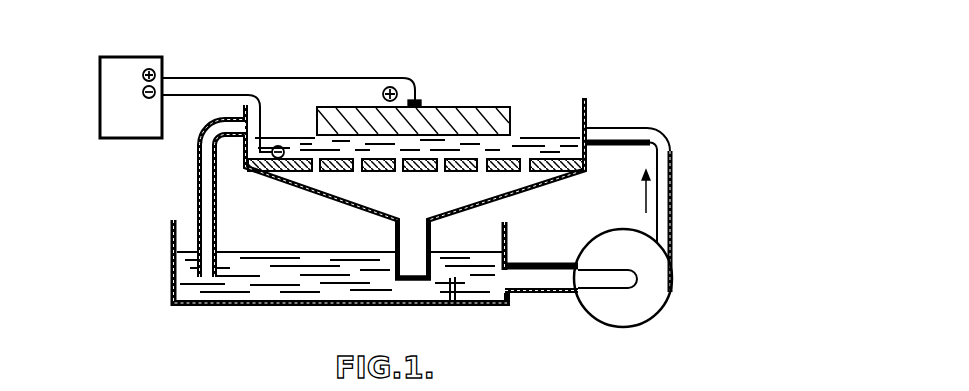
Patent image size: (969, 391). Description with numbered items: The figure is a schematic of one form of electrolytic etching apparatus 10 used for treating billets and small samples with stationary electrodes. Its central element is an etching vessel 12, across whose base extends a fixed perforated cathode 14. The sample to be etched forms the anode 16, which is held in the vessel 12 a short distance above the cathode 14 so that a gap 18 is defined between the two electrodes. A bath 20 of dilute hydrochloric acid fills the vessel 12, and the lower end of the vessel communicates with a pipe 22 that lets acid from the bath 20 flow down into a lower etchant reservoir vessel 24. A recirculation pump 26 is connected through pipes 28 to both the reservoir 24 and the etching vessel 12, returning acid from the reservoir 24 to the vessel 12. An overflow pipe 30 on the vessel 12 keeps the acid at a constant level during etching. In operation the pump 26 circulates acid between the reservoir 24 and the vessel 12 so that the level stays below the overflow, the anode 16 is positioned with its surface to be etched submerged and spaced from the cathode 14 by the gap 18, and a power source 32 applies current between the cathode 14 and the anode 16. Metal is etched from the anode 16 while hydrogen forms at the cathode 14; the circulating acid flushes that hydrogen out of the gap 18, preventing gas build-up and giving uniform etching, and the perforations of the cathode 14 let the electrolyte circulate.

The etching apparatus 10 is at (612, 67).
The etching vessel 12 is at (308, 197).
The fixed perforated cathode 14 is at (368, 173).
The anode 16 is at (340, 122).
The gap 18 is at (462, 147).
The bath 20 is at (580, 100).
The pipe 22 is at (437, 232).
The etchant reservoir vessel 24 is at (278, 307).
The recirculation pump 26 is at (652, 290).
The pipes 28 is at (673, 192).
The overflow pipe 30 is at (210, 219).
The power source 32 is at (100, 126).